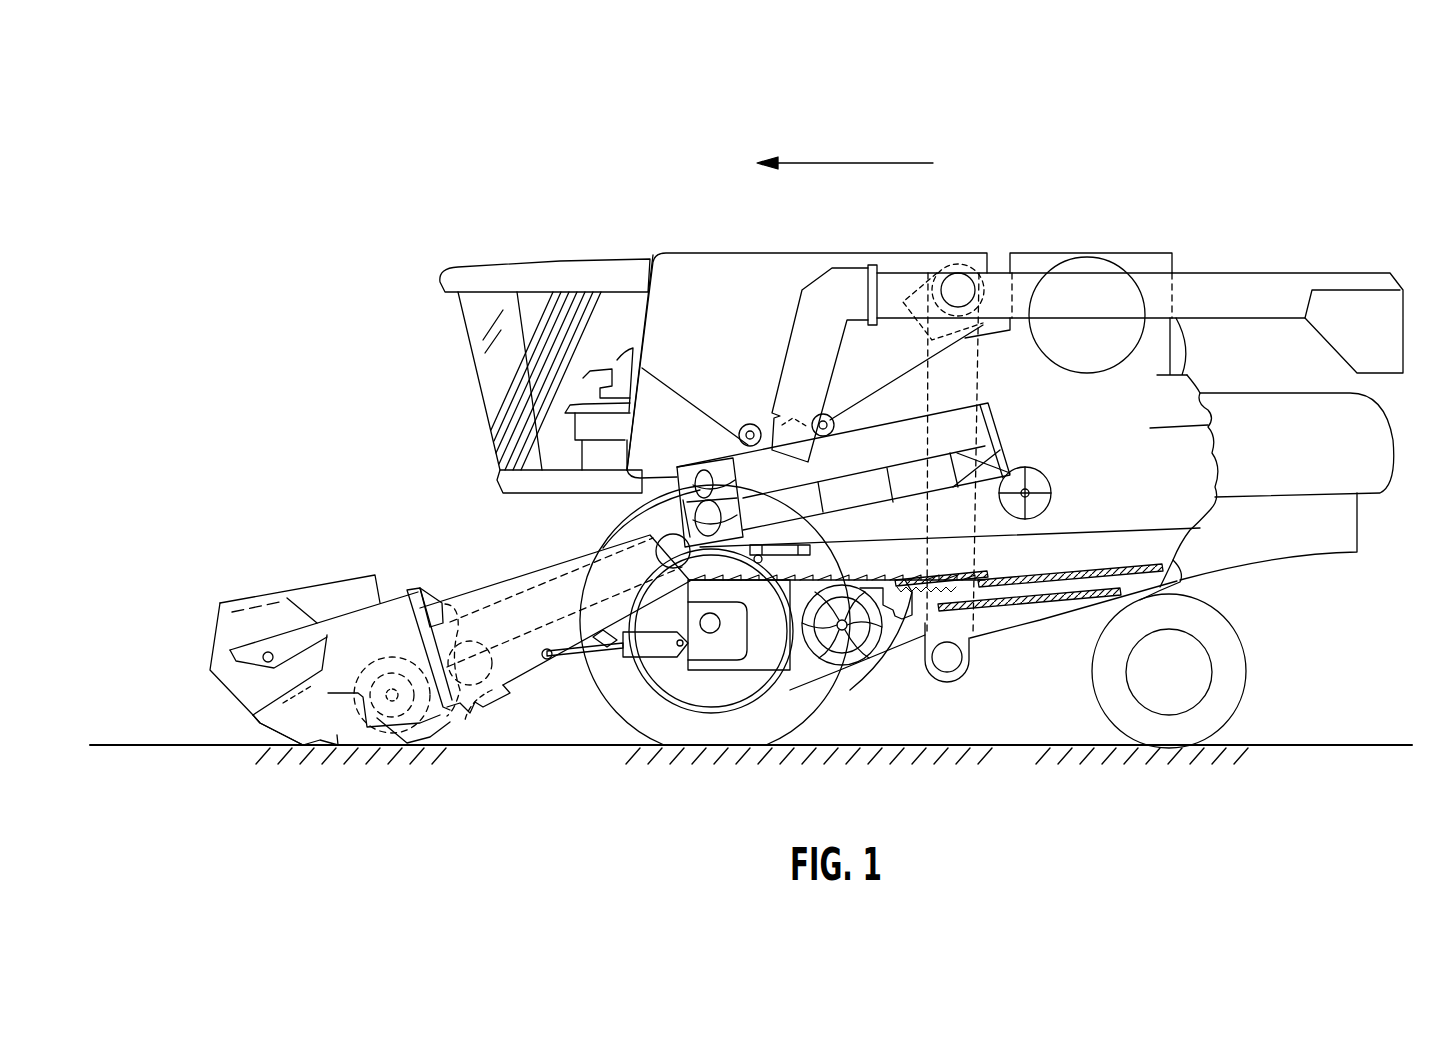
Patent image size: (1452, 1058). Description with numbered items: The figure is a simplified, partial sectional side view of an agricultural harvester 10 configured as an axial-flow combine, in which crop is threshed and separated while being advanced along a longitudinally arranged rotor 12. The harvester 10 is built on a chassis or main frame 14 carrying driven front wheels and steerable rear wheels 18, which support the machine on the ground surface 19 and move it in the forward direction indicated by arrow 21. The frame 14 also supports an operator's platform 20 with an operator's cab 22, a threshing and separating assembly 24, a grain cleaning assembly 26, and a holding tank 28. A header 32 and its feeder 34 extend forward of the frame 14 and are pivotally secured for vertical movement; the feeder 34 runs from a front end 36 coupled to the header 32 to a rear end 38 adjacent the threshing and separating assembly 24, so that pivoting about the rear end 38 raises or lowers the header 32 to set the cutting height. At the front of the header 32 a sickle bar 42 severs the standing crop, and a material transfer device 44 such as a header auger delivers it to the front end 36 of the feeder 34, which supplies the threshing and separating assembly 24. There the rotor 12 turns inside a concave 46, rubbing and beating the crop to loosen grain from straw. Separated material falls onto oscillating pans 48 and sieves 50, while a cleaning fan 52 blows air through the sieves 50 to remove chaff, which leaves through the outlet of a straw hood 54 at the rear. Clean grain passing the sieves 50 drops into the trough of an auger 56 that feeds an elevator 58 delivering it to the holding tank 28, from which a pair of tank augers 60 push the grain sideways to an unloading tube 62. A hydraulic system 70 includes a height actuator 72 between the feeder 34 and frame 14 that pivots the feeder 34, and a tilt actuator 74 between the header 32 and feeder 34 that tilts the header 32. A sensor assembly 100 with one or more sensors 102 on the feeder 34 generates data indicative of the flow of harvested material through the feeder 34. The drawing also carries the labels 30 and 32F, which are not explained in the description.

The agricultural harvester 10 is at (505, 208).
The rotor 12 is at (705, 483).
The main frame 14 is at (1193, 580).
The rear wheels 18 is at (1230, 685).
The ground surface 19 is at (200, 745).
The operator's platform 20 is at (512, 481).
The arrow 21 is at (863, 163).
The operator's cab 22 is at (490, 375).
The threshing and separating assembly 24 is at (858, 473).
The grain cleaning assembly 26 is at (650, 712).
The holding tank 28 is at (740, 253).
The grain tank 30 is at (1060, 260).
The header 32 is at (290, 587).
The header frame 32F is at (437, 750).
The feeder 34 is at (478, 574).
The front end 36 is at (397, 628).
The rear end 38 is at (645, 513).
The sickle bar 42 is at (273, 732).
The material transfer device 44 is at (393, 723).
The concave 46 is at (897, 430).
The pans 48 is at (853, 553).
The sieves 50 is at (987, 573).
The cleaning fan 52 is at (830, 665).
The straw hood 54 is at (1368, 447).
The auger 56 is at (947, 660).
The elevator 58 is at (975, 362).
The tank augers 60 is at (814, 414).
The unloading tube 62 is at (1232, 284).
The hydraulic system 70 is at (500, 706).
The height actuator 72 is at (643, 712).
The tilt actuator 74 is at (490, 710).
The sensor assembly 100 is at (567, 623).
The sensor 102 is at (602, 663).